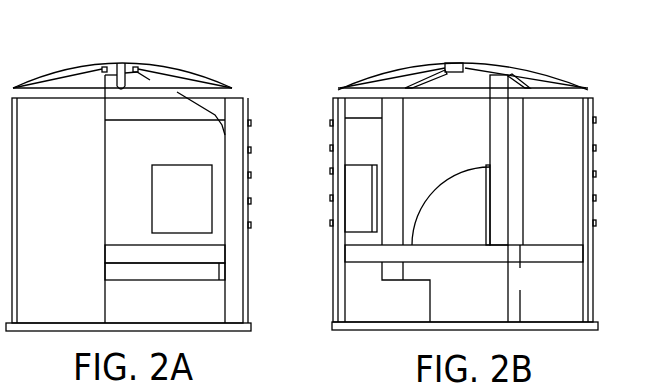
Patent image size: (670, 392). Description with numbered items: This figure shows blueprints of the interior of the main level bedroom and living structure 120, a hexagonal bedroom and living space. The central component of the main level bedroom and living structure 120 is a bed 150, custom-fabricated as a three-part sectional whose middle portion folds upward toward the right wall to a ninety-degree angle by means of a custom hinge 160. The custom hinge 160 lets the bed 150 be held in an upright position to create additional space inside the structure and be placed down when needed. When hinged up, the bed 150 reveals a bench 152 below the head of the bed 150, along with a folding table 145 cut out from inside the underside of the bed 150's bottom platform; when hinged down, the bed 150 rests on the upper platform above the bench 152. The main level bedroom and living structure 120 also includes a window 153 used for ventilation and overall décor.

In FIG. 2A, the main level bedroom and living structure 120 is at (160, 67).
In FIG. 2B, the main level bedroom and living structure 120 is at (590, 98).
In FIG. 2B, the folding table 145 is at (488, 183).
In FIG. 2A, the bed 150 is at (118, 245).
In FIG. 2B, the bed 150 is at (362, 252).
In FIG. 2B, the bench 152 is at (365, 290).
In FIG. 2A, the window 153 is at (197, 165).
In FIG. 2B, the window 153 is at (360, 175).
In FIG. 2B, the custom hinge 160 is at (508, 245).